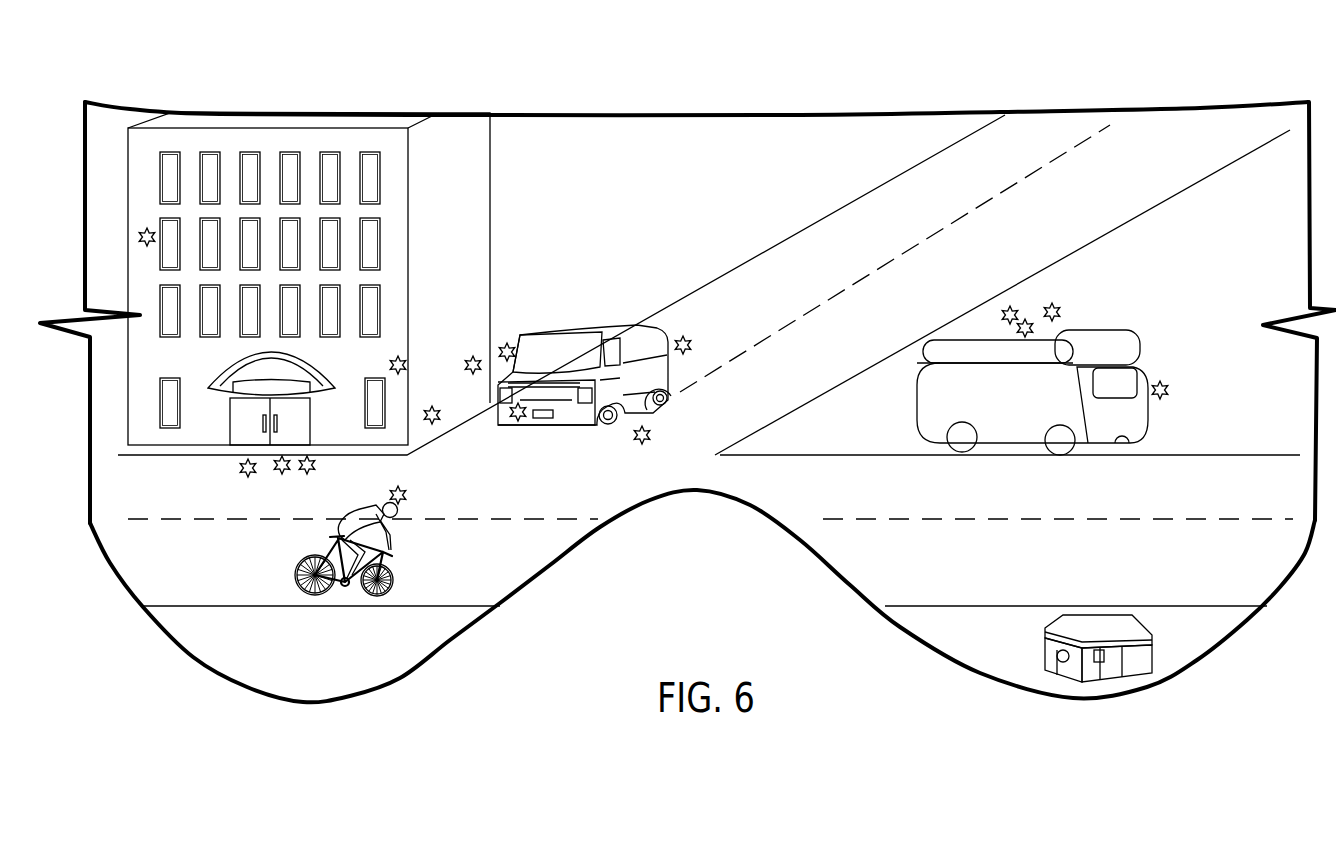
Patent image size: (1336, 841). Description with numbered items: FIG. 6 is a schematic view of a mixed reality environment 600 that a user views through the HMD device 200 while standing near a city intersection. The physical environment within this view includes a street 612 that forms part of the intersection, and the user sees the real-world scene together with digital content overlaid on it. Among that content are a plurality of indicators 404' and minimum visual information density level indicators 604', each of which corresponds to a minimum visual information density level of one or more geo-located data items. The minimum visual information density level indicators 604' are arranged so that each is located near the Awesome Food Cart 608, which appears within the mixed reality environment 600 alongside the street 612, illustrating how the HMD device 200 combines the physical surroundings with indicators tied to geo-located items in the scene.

The HMD device 200 is at (368, 112).
The mixed reality environment 600 is at (541, 146).
The indicator 404' is at (437, 366).
The minimum visual information density level indicator 604' is at (1095, 330).
The Awesome Food Cart 608 is at (1145, 362).
The street 612 is at (893, 491).